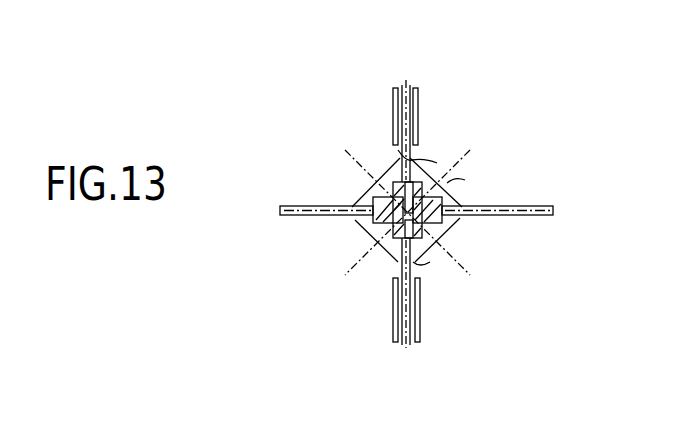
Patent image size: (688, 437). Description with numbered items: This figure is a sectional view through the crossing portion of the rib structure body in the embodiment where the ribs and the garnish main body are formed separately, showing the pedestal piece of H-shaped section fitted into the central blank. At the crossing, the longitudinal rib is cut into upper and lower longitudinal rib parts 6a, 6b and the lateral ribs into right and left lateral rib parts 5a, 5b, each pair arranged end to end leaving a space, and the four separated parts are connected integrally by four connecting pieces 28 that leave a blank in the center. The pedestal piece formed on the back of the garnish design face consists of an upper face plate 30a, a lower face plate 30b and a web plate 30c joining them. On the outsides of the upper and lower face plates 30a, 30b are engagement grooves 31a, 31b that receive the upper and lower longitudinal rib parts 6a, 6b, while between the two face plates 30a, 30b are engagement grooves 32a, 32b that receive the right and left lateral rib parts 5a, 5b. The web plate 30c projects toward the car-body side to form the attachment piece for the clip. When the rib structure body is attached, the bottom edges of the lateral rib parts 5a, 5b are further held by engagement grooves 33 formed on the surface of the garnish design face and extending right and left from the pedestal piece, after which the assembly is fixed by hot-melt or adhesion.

The right lateral rib part 5a is at (428, 272).
The left lateral rib part 5b is at (442, 162).
The upper longitudinal rib part 6a is at (313, 205).
The lower longitudinal rib part 6b is at (547, 205).
The connecting piece 28 is at (366, 168).
The upper face plate 30a is at (392, 240).
The lower face plate 30b is at (413, 262).
The web plate 30c is at (392, 228).
The engagement groove 31a is at (375, 216).
The engagement groove 31b is at (445, 214).
The engagement groove 32a is at (402, 262).
The engagement groove 32b is at (405, 178).
The engagement groove 33 is at (405, 88).